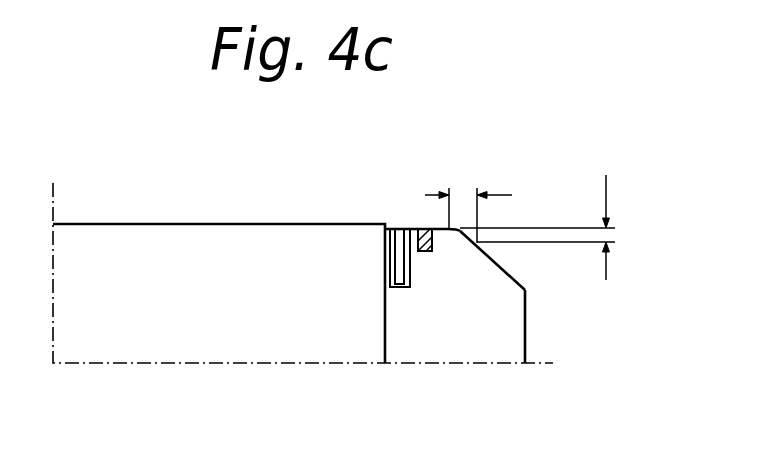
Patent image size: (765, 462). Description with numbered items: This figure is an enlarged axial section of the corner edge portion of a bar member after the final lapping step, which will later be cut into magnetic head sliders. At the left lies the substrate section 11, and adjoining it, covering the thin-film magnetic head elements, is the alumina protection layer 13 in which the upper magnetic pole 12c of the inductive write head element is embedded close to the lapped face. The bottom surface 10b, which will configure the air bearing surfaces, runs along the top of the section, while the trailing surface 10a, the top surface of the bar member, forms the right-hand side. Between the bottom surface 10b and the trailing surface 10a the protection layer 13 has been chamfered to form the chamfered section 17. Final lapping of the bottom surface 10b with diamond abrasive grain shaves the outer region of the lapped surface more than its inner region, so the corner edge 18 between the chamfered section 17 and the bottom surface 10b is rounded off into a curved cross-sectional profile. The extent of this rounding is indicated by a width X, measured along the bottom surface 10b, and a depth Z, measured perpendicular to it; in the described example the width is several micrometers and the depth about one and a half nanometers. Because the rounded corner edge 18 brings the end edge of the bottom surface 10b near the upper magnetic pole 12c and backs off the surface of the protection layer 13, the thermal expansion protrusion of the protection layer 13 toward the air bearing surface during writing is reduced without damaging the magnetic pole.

The substrate section 11 is at (180, 238).
The bottom surface 10b is at (438, 229).
The upper magnetic pole 12c is at (433, 228).
The chamfered section 17 is at (494, 257).
The trailing surface 10a is at (526, 318).
The protection layer 13 is at (500, 352).
The corner edge 18 is at (478, 228).
The width of the rounded edge X is at (468, 200).
The depth of the rounded edge Z is at (623, 227).